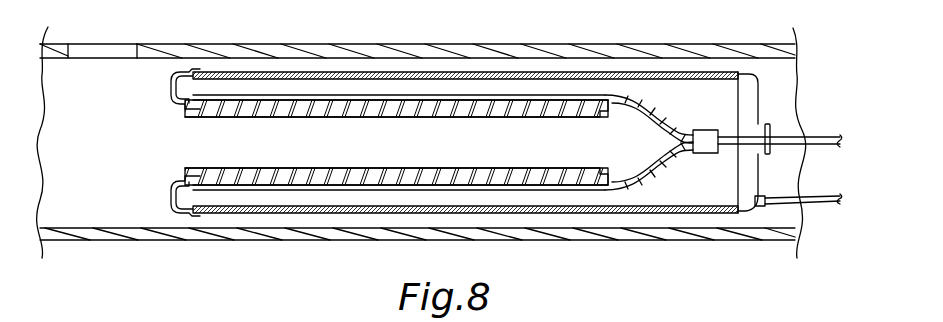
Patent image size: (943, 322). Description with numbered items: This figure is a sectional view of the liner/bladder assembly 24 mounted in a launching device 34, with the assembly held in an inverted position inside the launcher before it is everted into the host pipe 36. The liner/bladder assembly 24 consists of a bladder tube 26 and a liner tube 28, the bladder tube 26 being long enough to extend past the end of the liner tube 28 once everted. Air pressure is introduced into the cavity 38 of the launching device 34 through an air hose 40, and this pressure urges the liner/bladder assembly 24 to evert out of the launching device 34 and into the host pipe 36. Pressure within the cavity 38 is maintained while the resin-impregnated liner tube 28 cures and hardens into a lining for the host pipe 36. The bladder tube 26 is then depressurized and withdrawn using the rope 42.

The liner/bladder assembly 24 is at (543, 78).
The bladder tube 26 is at (355, 94).
The liner tube 28 is at (392, 168).
The launching device 34 is at (436, 76).
The host pipe 36 is at (258, 50).
The cavity 38 is at (683, 185).
The air hose 40 is at (806, 205).
The rope 42 is at (808, 143).